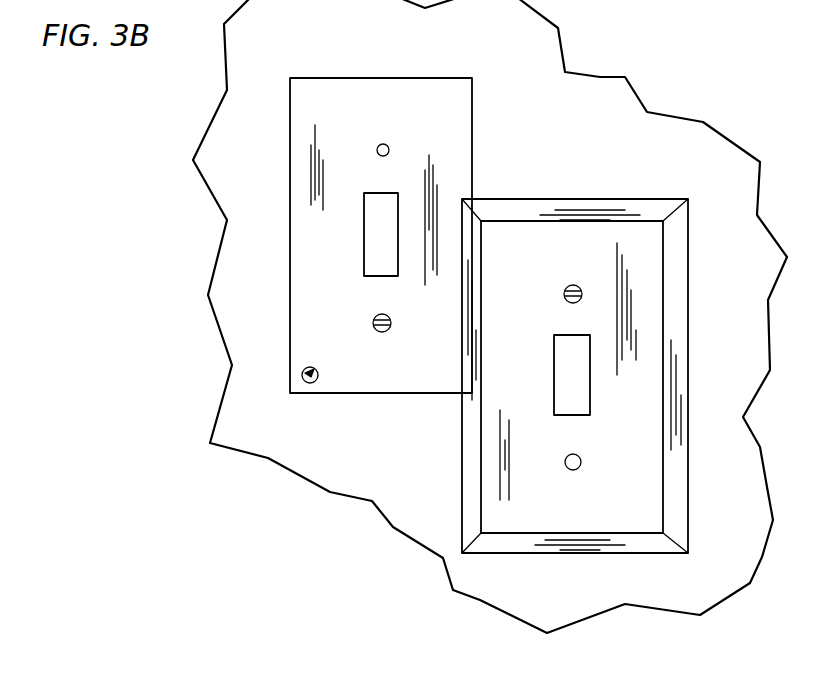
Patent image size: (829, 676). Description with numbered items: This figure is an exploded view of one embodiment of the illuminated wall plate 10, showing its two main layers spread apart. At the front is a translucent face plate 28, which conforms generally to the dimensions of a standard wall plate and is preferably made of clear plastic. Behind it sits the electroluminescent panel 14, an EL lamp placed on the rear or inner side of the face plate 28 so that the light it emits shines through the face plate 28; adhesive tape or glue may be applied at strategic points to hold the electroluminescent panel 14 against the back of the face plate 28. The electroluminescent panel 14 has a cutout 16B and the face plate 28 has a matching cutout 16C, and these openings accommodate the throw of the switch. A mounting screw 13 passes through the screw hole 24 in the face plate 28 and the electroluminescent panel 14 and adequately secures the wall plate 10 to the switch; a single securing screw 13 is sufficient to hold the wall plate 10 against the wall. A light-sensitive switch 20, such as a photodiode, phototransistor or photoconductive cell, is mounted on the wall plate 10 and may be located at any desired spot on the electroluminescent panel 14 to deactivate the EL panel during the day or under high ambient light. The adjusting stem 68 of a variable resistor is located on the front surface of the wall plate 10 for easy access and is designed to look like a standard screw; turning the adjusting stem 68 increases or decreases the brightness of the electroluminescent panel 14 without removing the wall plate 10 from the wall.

The wall plate 10 is at (557, 148).
The electroluminescent panel 14 is at (290, 157).
The cutout 16B is at (364, 230).
The cutout 16C is at (568, 360).
The screw hole 24 is at (378, 147).
The adjusting stem 68 is at (381, 332).
The light-sensitive switch 20 is at (320, 380).
The face plate 28 is at (645, 554).
The mounting screw 13 is at (570, 285).